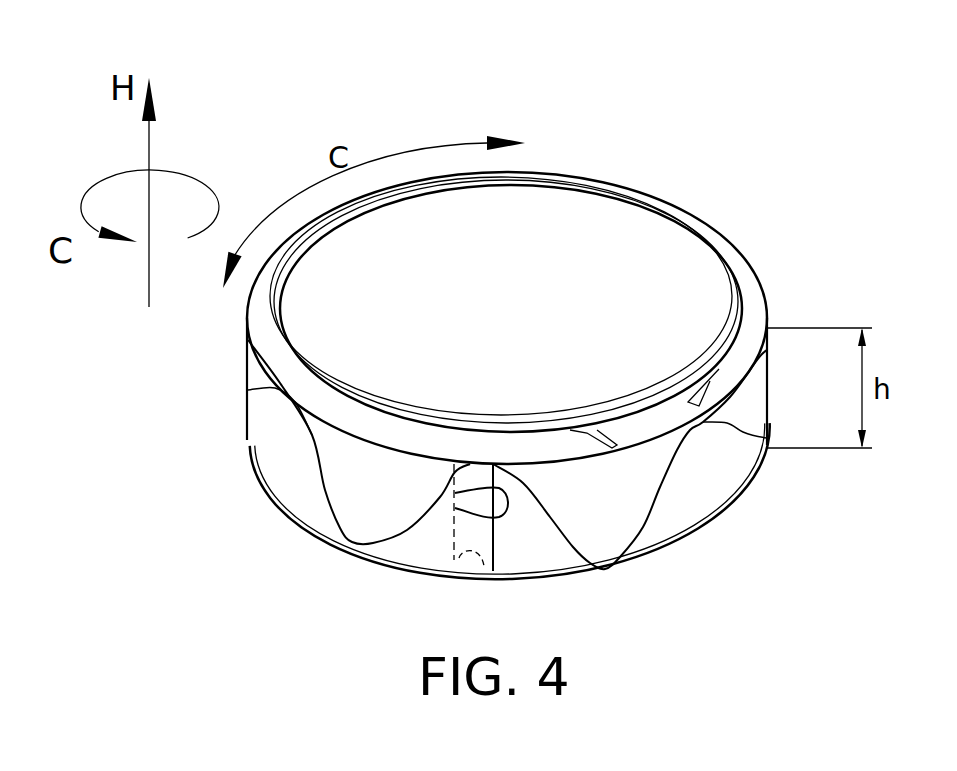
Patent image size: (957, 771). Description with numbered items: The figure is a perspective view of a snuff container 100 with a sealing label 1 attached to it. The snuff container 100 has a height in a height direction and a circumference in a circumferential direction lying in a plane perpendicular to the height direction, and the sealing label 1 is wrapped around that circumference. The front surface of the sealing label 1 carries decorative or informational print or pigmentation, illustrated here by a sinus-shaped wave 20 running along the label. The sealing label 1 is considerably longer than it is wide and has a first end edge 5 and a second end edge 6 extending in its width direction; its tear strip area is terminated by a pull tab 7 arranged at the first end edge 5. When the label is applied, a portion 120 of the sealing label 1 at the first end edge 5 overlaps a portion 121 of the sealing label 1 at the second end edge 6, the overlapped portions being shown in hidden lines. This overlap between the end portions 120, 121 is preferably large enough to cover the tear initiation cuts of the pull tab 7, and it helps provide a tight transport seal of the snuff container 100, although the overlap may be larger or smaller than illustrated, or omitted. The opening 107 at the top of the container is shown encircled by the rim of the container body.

The snuff container 100 is at (722, 158).
The top opening / lid seat 107 is at (573, 255).
The sealing label 1 is at (713, 465).
The sinus-shaped wave 20 is at (320, 477).
The first end edge 5 is at (494, 541).
The pull tab 7 is at (494, 501).
The second end edge 6 is at (454, 537).
The end portion at first end edge 120 is at (460, 560).
The end portion at second end edge 121 is at (485, 562).